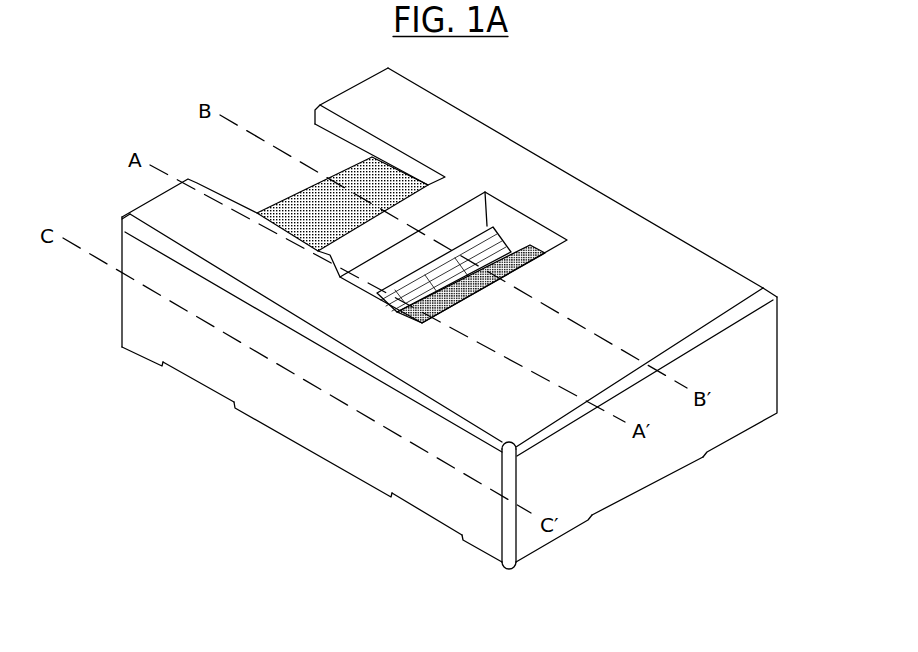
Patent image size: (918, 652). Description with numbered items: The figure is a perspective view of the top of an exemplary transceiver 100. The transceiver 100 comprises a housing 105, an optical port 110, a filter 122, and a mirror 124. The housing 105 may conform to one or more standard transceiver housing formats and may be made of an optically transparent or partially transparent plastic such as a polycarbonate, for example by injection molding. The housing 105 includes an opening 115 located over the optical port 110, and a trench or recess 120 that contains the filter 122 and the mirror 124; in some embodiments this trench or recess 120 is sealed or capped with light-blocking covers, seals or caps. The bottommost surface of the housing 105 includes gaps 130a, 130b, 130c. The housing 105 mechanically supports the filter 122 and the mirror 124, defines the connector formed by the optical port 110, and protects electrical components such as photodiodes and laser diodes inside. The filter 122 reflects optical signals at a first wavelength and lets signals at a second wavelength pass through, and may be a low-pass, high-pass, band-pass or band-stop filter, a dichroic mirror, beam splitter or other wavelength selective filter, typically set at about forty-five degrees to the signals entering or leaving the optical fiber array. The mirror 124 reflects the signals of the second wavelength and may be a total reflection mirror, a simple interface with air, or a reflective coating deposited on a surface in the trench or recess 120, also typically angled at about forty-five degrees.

The transceiver 100 is at (577, 118).
The housing 105 is at (634, 238).
The optical port 110 is at (265, 183).
The opening 115 is at (330, 145).
The trench or recess 120 is at (388, 270).
The filter 122 is at (497, 245).
The mirror 124 is at (513, 261).
The gap 130a is at (197, 388).
The gap 130b is at (423, 518).
The gap 130c is at (642, 495).